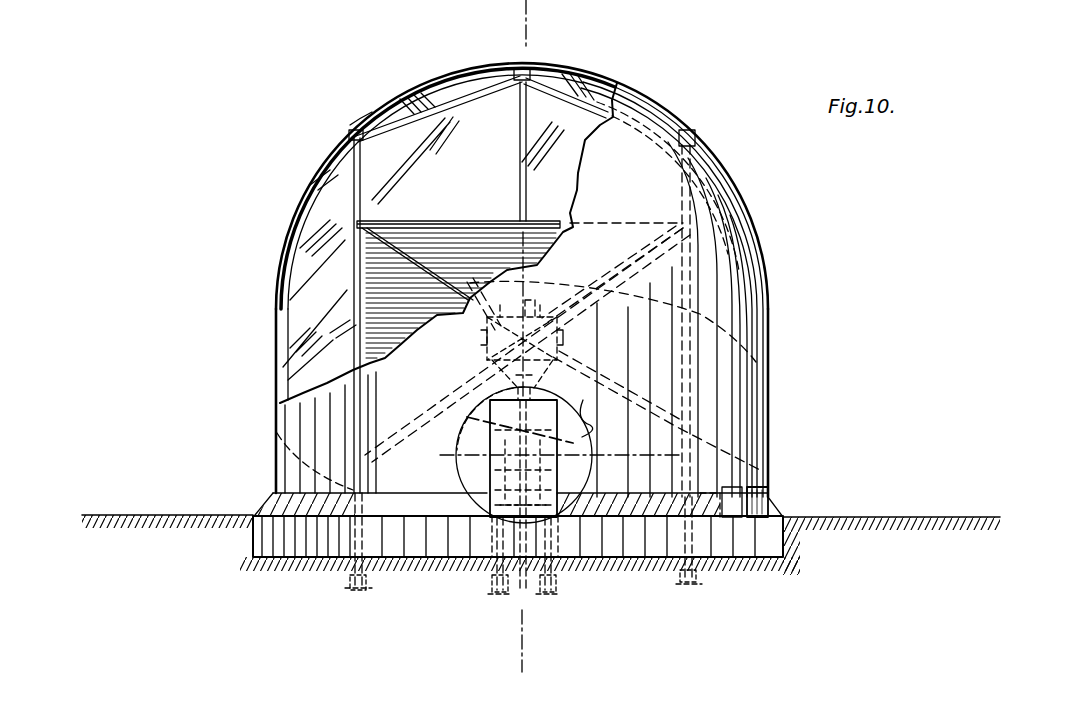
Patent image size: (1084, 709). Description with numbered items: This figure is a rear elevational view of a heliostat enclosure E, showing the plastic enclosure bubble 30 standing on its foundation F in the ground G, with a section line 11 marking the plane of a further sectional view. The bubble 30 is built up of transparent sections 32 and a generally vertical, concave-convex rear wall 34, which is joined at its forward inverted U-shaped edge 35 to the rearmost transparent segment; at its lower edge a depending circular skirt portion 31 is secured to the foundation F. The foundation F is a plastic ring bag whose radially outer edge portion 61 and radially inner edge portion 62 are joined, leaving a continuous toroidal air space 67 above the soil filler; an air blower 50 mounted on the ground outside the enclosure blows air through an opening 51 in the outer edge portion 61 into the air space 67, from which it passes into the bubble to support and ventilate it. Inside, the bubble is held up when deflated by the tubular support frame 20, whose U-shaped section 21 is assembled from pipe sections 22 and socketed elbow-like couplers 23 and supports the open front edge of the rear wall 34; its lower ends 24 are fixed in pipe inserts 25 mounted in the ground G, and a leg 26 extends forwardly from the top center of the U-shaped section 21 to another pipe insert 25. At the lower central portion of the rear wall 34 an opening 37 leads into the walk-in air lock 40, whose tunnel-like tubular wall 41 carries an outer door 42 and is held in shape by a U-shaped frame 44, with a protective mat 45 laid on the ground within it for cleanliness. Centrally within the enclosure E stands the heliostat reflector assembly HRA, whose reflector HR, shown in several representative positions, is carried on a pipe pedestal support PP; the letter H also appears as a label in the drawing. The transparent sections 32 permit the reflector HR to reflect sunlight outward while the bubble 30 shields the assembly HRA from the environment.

The section line 11 is at (555, 7).
The tubular support frame 20 is at (519, 133).
The U-shaped section 21 is at (410, 92).
The pipe sections 22 is at (490, 66).
The socketed elbow-like couplers 23 is at (540, 68).
The lower ends 24 is at (770, 425).
The pipe inserts 25 is at (362, 586).
The leg section 26 is at (527, 181).
The plastic enclosure bubble 30 is at (272, 289).
The depending circular skirt portion 31 is at (270, 470).
The transparent sections 32 is at (376, 110).
The rear wall 34 is at (722, 298).
The inverted U-shaped edge 35 is at (320, 180).
The opening 37 is at (536, 330).
The walk-in air lock 40 is at (455, 441).
The tunnel-like tubular wall 41 is at (566, 462).
The outer door 42 is at (492, 468).
The U-shaped frame 44 is at (584, 437).
The protective mat 45 is at (500, 531).
The air blower 50 is at (778, 495).
The opening 51 is at (725, 570).
The radially outer edge portion 61 is at (787, 500).
The radially inner edge portion 62 is at (768, 455).
The toroidal air space 67 is at (262, 505).
The heliostat enclosure E is at (688, 132).
The hemispherical dome H is at (297, 212).
The reflector HR is at (407, 226).
The heliostat reflector assembly HRA is at (459, 214).
The pipe pedestal support PP is at (505, 422).
The foundation F is at (790, 520).
The ground G is at (95, 528).